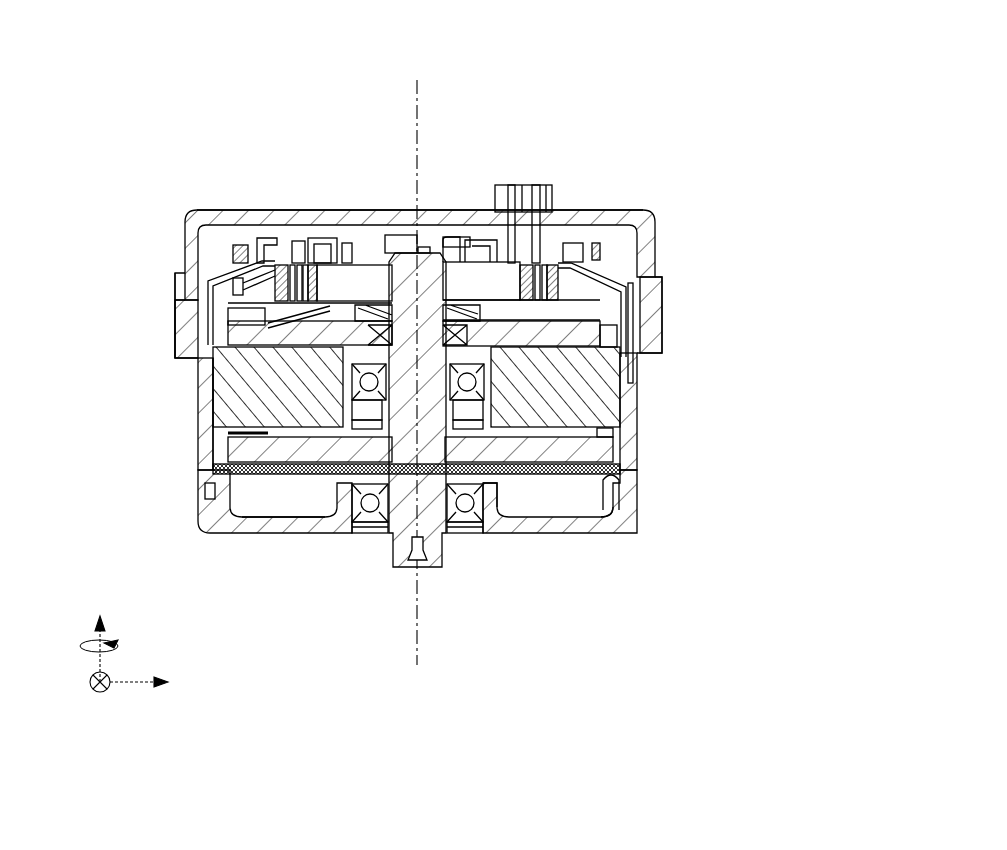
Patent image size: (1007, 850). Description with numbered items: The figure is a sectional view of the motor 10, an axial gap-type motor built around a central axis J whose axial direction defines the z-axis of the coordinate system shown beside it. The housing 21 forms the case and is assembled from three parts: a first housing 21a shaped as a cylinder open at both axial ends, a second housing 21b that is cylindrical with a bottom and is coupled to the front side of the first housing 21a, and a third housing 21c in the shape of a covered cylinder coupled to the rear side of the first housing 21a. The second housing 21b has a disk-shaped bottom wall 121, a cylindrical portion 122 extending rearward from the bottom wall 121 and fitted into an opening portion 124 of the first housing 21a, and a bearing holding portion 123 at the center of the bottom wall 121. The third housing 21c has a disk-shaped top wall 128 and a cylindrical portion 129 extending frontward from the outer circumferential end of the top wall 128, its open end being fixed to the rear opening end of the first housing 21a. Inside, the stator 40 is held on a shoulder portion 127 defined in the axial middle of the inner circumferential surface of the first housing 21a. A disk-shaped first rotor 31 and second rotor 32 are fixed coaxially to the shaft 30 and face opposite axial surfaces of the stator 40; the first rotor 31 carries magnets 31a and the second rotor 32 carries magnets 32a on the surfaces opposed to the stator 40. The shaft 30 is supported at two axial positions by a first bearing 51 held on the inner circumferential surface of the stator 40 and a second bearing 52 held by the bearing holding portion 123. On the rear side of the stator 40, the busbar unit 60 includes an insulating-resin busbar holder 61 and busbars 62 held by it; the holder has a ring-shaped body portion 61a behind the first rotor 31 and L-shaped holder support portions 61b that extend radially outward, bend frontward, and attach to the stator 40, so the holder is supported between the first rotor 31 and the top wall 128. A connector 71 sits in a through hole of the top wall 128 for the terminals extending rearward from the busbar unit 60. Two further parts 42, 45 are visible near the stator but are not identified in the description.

The motor 10 is at (615, 85).
The housing 21 is at (803, 302).
The first housing 21a is at (637, 465).
The second housing 21b is at (637, 516).
The third housing 21c is at (647, 258).
The shaft 30 is at (402, 568).
The first rotor 31 is at (245, 334).
The magnets 31a is at (596, 353).
The second rotor 32 is at (240, 448).
The magnets 32a is at (615, 428).
The stator 40 is at (228, 386).
The bracket 42 is at (613, 293).
The plate 45 is at (650, 335).
The first bearing 51 is at (480, 386).
The second bearing 52 is at (477, 527).
The busbar unit 60 is at (378, 166).
The busbar holder 61 is at (375, 260).
The body portion 61a is at (310, 278).
The holder support portions 61b is at (243, 296).
The busbars 62 is at (343, 243).
The connector 71 is at (552, 190).
The bottom wall 121 is at (303, 523).
The cylindrical portion 122 is at (612, 520).
The bearing holding portion 123 is at (485, 520).
The opening portion 124 is at (627, 520).
The shoulder portion 127 is at (213, 432).
The top wall 128 is at (237, 212).
The cylindrical portion 129 is at (185, 258).
The central axis J is at (418, 134).